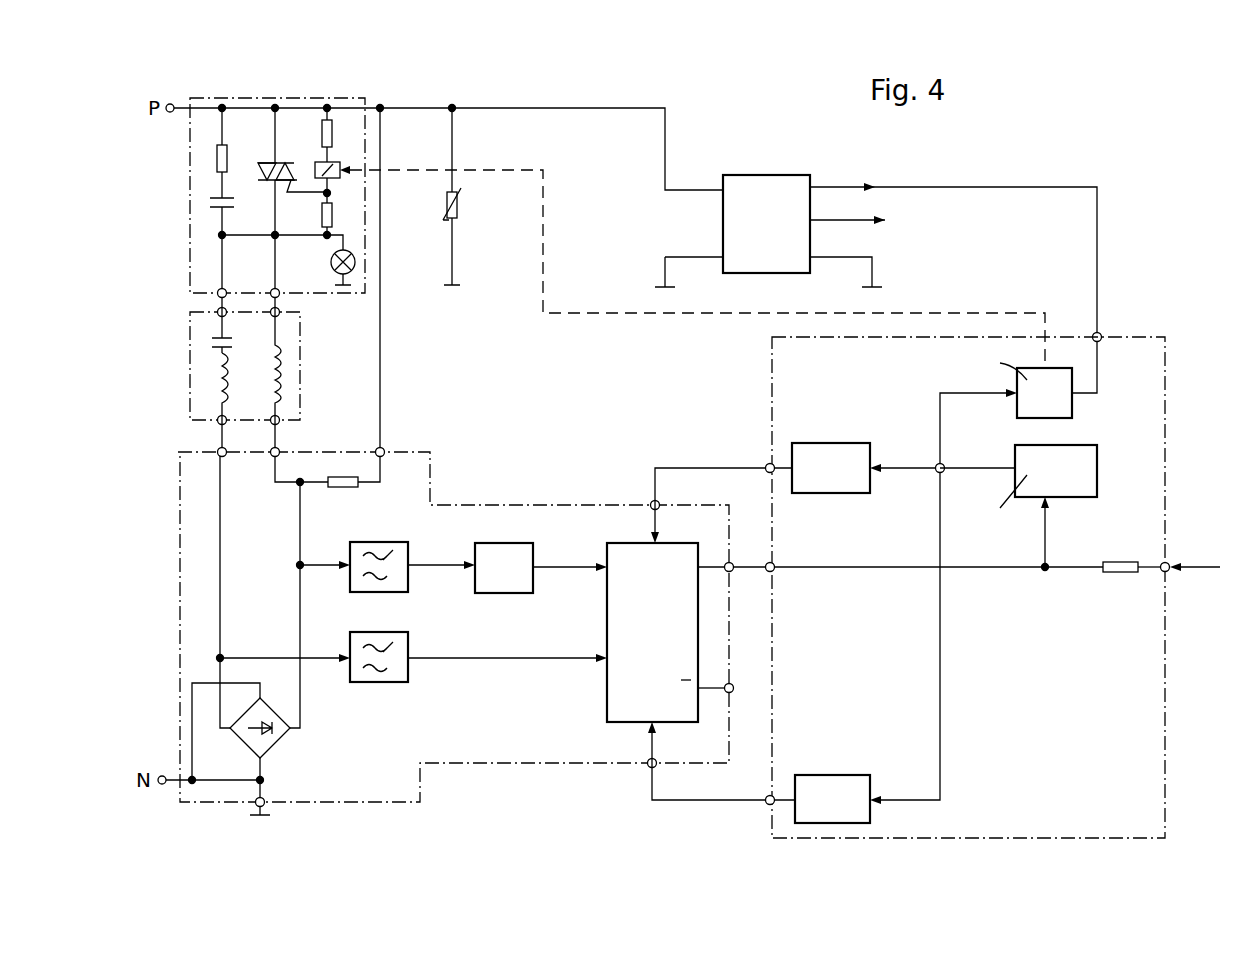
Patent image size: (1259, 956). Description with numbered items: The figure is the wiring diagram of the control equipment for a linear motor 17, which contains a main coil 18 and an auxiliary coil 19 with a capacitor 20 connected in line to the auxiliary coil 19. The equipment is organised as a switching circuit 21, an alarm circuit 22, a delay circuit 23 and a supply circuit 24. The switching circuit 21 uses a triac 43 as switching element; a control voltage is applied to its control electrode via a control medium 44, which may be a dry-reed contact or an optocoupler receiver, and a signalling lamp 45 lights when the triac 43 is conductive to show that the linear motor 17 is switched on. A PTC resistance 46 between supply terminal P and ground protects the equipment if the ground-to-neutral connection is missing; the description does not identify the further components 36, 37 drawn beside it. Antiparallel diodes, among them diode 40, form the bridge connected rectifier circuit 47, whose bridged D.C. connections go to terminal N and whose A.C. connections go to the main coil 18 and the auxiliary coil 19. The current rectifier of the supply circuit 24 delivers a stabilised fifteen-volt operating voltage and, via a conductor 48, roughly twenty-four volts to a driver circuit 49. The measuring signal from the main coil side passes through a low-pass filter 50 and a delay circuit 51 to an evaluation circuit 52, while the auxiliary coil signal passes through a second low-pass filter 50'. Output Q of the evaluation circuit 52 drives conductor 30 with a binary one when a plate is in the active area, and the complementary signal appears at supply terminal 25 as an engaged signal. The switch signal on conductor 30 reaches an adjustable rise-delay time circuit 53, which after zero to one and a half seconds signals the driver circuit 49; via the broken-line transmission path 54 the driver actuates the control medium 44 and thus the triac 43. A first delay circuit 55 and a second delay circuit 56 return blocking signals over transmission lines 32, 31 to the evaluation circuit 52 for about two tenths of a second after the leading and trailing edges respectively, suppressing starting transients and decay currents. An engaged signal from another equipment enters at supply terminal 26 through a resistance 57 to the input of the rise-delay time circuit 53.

The linear motor 17 is at (302, 352).
The main coil 18 is at (270, 371).
The auxiliary coil 19 is at (215, 380).
The capacitor 20 is at (212, 342).
The switching circuit 21 is at (372, 100).
The alarm circuit 22 is at (527, 500).
The delay circuit 23 is at (1170, 420).
The supply circuit 24 is at (768, 183).
The supply terminal 25 is at (735, 686).
The supply terminal 26 is at (1176, 560).
The conductor 30 is at (745, 565).
The transmission line 31 is at (705, 466).
The transmission line 32 is at (690, 803).
The resistor 36 is at (216, 158).
The capacitor 37 is at (210, 201).
The diode 40 is at (345, 485).
The triac 43 is at (284, 166).
The control medium 44 is at (343, 165).
The signalling lamp 45 is at (331, 262).
The PTC resistance 46 is at (460, 206).
The bridge connected rectifier circuit 47 is at (283, 745).
The conductor 48 is at (1100, 305).
The driver circuit 49 is at (1060, 398).
The low-pass filter 50 is at (412, 545).
The low-pass filter 50' is at (478, 683).
The delay circuit 51 is at (535, 563).
The evaluation circuit 52 is at (607, 605).
The rise-delay time circuit 53 is at (1097, 478).
The transmission path 54 is at (610, 318).
The delay circuit 55 is at (838, 775).
The second delay circuit 56 is at (835, 443).
The resistance 57 is at (1115, 576).